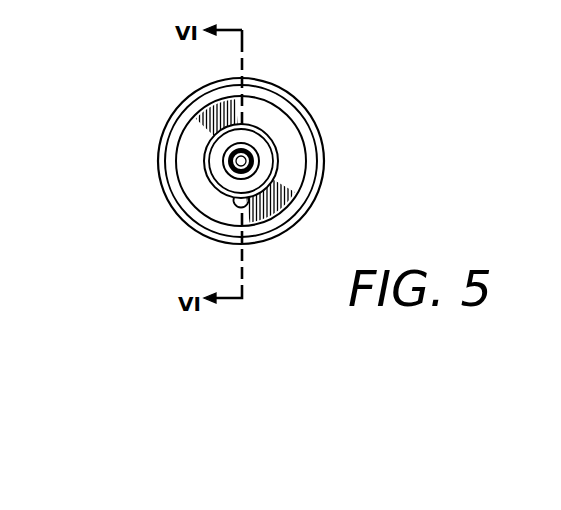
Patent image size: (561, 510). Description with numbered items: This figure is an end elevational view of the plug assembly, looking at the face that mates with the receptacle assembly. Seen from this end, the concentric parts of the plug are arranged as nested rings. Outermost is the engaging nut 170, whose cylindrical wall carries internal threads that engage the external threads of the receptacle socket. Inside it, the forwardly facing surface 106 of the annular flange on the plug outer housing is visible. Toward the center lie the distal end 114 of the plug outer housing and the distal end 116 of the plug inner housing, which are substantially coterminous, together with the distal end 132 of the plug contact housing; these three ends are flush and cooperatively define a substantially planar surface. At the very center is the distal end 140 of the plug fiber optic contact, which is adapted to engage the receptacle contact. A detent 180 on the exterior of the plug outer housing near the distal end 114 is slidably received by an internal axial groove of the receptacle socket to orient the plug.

The engaging nut 170 is at (276, 89).
The forwardly facing surface 106 is at (285, 133).
The distal end of the plug outer housing 114 is at (274, 181).
The distal end of the plug inner housing 116 is at (263, 160).
The distal end of the plug contact housing 132 is at (233, 173).
The distal end of the plug fiber optic contact 140 is at (237, 161).
The detent 180 is at (246, 207).